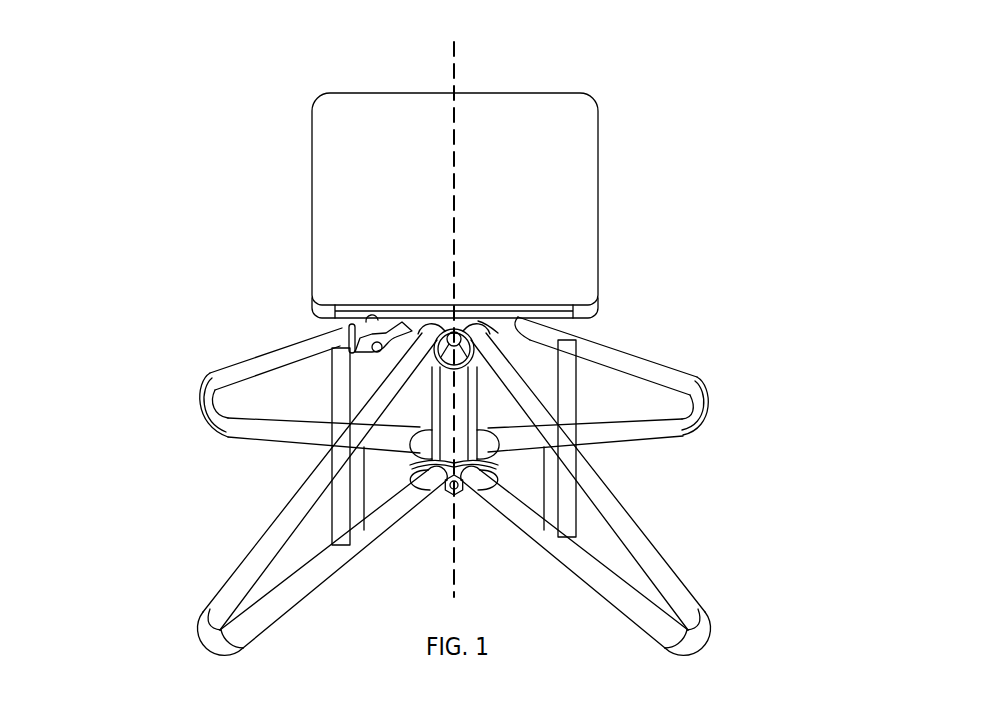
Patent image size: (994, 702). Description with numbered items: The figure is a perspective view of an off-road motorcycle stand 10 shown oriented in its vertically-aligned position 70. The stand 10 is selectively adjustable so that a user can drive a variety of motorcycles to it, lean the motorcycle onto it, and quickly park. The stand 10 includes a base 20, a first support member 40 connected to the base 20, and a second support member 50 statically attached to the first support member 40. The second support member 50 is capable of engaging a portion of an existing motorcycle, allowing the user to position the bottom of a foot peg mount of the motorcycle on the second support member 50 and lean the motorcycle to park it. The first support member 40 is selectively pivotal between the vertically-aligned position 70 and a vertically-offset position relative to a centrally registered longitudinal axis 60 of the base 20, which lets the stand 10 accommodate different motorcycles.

The off-road motorcycle stand 10 is at (150, 152).
The base 20 is at (690, 343).
The first support member 40 is at (410, 415).
The second support member 50 is at (565, 186).
The centrally registered longitudinal axis 60 is at (454, 92).
The vertically-aligned position 70 is at (293, 252).